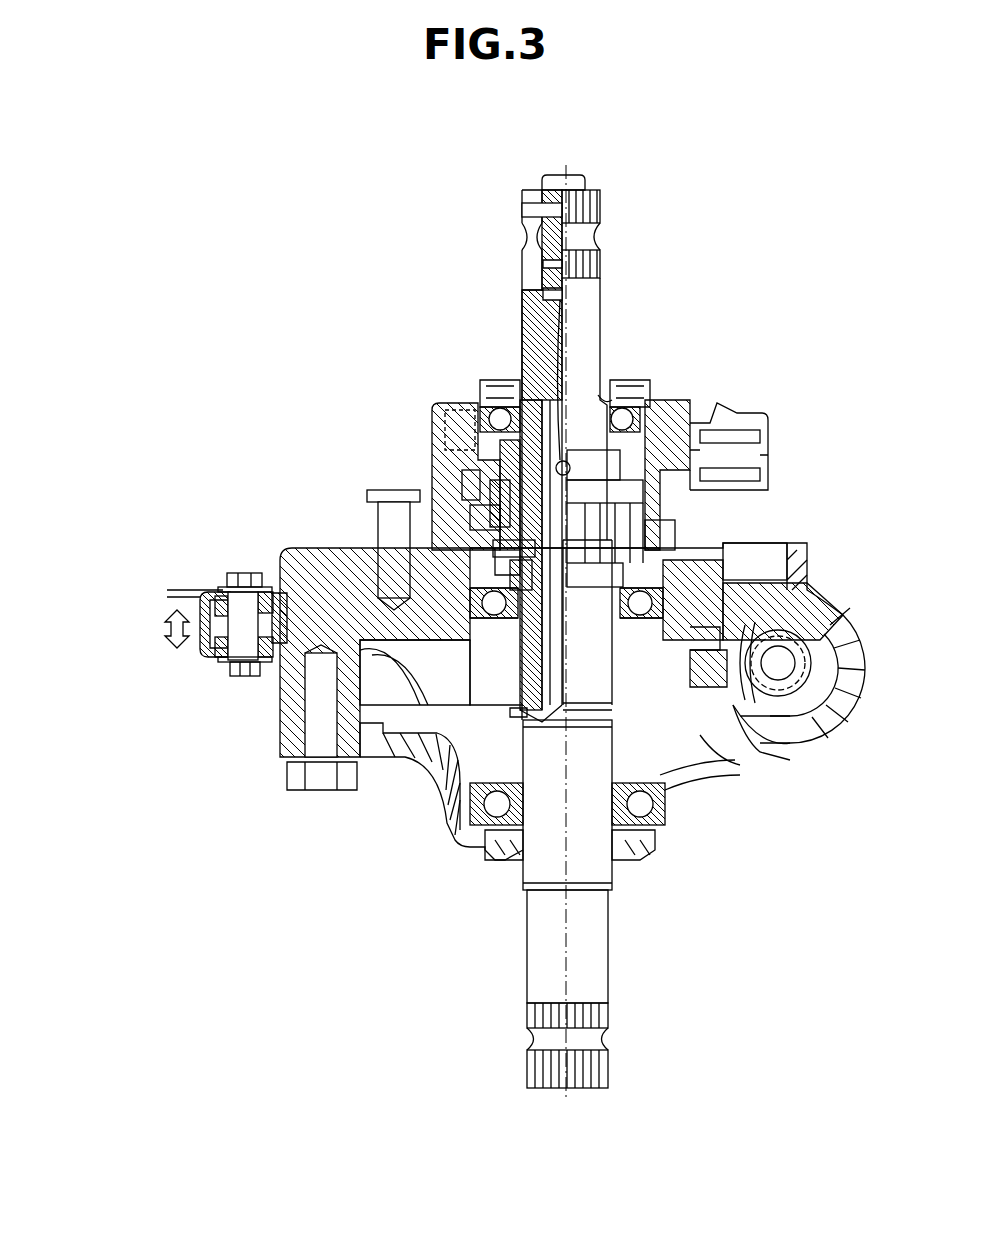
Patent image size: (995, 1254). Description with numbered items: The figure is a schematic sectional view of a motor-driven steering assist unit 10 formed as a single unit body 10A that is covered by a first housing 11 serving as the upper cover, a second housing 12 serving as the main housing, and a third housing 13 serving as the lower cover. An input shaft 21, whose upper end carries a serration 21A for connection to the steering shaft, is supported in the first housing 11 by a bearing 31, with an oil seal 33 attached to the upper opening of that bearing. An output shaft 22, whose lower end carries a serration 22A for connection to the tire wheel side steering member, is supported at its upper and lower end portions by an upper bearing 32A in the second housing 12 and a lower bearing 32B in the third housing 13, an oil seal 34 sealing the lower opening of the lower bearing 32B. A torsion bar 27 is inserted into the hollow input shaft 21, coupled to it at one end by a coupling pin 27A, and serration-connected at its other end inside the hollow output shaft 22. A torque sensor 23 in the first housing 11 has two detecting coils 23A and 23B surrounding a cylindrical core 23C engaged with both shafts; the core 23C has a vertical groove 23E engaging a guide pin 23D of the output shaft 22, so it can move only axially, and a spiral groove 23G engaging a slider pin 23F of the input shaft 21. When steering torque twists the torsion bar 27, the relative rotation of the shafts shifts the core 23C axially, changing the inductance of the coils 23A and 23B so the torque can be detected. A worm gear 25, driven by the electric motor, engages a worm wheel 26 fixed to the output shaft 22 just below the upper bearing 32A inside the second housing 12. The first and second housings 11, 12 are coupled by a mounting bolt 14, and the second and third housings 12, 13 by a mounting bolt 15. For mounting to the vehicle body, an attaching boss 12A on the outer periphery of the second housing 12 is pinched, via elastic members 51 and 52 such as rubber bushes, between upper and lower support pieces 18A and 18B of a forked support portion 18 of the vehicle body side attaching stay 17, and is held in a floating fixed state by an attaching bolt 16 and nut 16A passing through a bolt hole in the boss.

The motor-driven steering assist unit 10 is at (362, 280).
The unit body 10A is at (824, 511).
The first housing 11 is at (432, 412).
The second housing 12 is at (283, 736).
The attaching boss 12A is at (167, 592).
The third housing 13 is at (432, 785).
The mounting bolt 14 is at (380, 492).
The mounting bolt 15 is at (297, 787).
The attaching bolt 16 is at (240, 575).
The nut 16A is at (248, 678).
The vehicle body side attaching stay 17 is at (205, 600).
The forked support portion 18 is at (184, 661).
The upper support piece 18A is at (215, 594).
The lower support piece 18B is at (215, 657).
The input shaft 21 is at (522, 270).
The serration 21A is at (601, 208).
The output shaft 22 is at (540, 968).
The serration 22A is at (600, 1010).
The torque sensor 23 is at (465, 395).
The detecting coil 23A is at (452, 445).
The detecting coil 23B is at (470, 517).
The cylindrical core 23C is at (470, 473).
The guide pin 23D is at (662, 535).
The vertical groove 23E is at (520, 550).
The slider pin 23F is at (568, 458).
The spiral groove 23G is at (600, 395).
The worm gear 25 is at (843, 625).
The worm wheel 26 is at (745, 705).
The torsion bar 27 is at (552, 178).
The coupling pin 27A is at (522, 212).
The bearing 31 is at (690, 412).
The upper bearing 32A is at (735, 585).
The lower bearing 32B is at (665, 825).
The oil seal 33 is at (640, 408).
The oil seal 34 is at (640, 853).
The elastic member 51 is at (255, 572).
The elastic member 52 is at (215, 662).